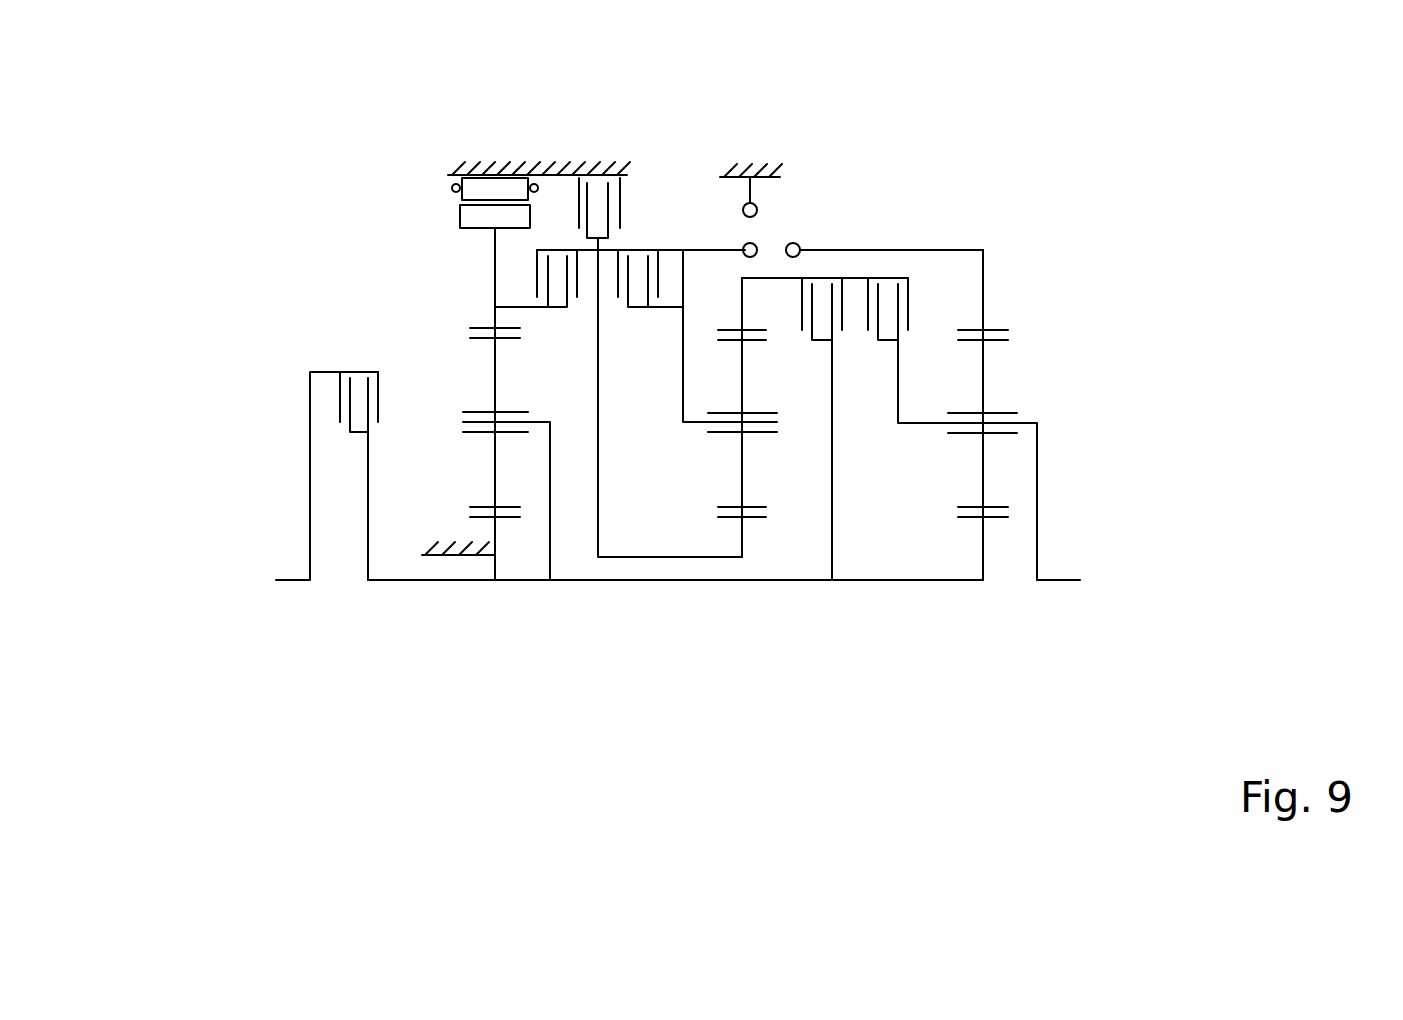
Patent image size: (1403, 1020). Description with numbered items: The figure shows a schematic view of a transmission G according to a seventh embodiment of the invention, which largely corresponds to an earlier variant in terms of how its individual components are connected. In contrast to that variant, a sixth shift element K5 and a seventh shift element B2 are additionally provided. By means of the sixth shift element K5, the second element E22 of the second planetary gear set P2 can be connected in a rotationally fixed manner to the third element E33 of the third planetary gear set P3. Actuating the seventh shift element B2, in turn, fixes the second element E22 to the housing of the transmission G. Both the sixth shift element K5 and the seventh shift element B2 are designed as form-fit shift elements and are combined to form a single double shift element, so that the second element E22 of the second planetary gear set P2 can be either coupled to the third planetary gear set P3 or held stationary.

The transmission G is at (292, 168).
The second element of the second planetary gear set E22 is at (697, 420).
The seventh shift element B2 is at (763, 226).
The sixth shift element K5 is at (782, 233).
The third element of the third planetary gear set E33 is at (985, 290).
The second planetary gear set P2 is at (742, 583).
The third planetary gear set P3 is at (983, 583).